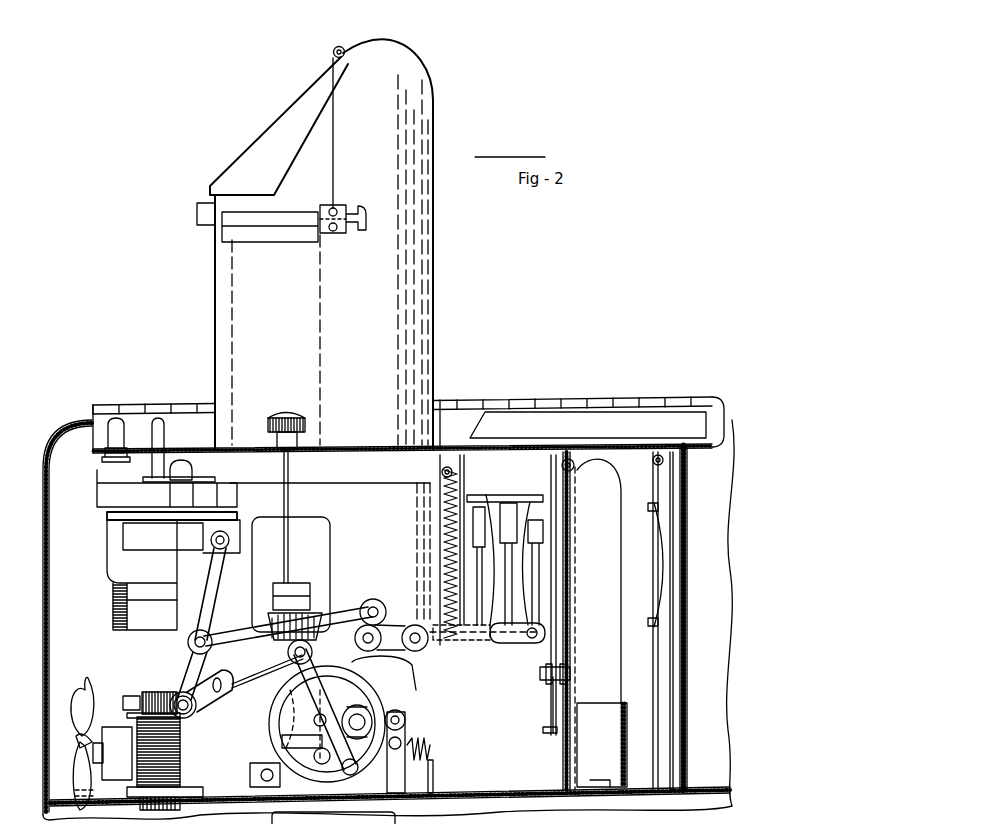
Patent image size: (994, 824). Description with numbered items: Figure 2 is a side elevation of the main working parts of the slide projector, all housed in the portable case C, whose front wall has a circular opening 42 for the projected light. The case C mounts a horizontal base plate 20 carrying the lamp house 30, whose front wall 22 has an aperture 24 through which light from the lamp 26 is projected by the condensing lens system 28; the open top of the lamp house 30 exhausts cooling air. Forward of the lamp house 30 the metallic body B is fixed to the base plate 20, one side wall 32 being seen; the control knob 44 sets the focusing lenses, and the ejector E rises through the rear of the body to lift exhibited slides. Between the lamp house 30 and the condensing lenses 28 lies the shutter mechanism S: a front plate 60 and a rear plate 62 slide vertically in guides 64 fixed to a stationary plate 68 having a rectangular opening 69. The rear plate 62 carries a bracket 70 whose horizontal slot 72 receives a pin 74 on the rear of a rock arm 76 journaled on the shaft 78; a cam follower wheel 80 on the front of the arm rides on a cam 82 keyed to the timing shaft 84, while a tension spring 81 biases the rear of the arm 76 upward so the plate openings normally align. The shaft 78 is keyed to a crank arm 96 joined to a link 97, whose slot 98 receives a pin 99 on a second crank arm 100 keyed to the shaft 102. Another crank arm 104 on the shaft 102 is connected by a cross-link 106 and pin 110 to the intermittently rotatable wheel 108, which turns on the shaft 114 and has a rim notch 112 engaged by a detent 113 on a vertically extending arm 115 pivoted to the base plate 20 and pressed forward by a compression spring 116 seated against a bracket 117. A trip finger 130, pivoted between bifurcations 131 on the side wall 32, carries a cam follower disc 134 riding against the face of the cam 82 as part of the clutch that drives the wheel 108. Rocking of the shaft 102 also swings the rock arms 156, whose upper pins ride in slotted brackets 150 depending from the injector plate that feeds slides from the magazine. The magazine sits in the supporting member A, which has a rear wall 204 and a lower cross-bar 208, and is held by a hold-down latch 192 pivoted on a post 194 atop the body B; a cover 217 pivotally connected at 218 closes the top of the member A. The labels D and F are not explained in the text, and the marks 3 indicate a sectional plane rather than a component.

The switch 3 is at (280, 442).
The base plate 20 is at (535, 790).
The front wall of the lamp house 22 is at (456, 627).
The aperture 24 is at (443, 553).
The lamp 26 is at (622, 702).
The condensing lens system 28 is at (484, 547).
The lamp house 30 is at (650, 782).
The side wall of the body 32 is at (358, 488).
The circular opening 42 is at (43, 546).
The control knob 44 is at (287, 411).
The front shutter plate 60 is at (540, 653).
The rear shutter plate 62 is at (558, 653).
The guides 64 is at (540, 676).
The fixed plate 68 is at (563, 746).
The rectangular opening 69 is at (580, 541).
The bracket 70 is at (545, 622).
The horizontal slot 72 is at (498, 646).
The pin 74 is at (548, 634).
The rock arm 76 is at (471, 641).
The shaft 78 is at (418, 624).
The cam follower wheel 80 is at (357, 648).
The helical tension spring 81 is at (455, 485).
The cam 82 is at (415, 684).
The timing shaft 84 is at (403, 717).
The crank arm 96 is at (394, 614).
The link 97 is at (243, 683).
The slot 98 is at (200, 696).
The pin 99 is at (186, 713).
The second crank arm 100 is at (187, 677).
The shaft 102 is at (187, 643).
The crank arm 104 is at (242, 645).
The cross-link 106 is at (283, 690).
The intermittently rotatable wheel 108 is at (272, 751).
The pin 110 is at (353, 768).
The notch 112 is at (268, 727).
The detent 113 is at (392, 712).
The shaft 114 is at (350, 673).
The vertically extending arm 115 is at (400, 780).
The helical compression spring 116 is at (424, 740).
The bracket 117 is at (428, 757).
The trip finger 130 is at (272, 739).
The bifurcations 131 is at (302, 731).
The cam follower disc 134 is at (372, 702).
The brackets 150 is at (203, 531).
The rock arms 156 is at (205, 572).
The hold-down latch 192 is at (177, 481).
The post 194 is at (173, 498).
The rear wall 204 is at (433, 92).
The lower cross-bar 208 is at (218, 500).
The cover 217 is at (277, 128).
The pivotal connection 218 is at (341, 45).
The magazine supporting member A is at (434, 131).
The metallic body B is at (341, 557).
The case C is at (45, 683).
The post D is at (261, 777).
The ejector E is at (322, 620).
The lever F is at (200, 632).
The shutter mechanism S is at (558, 452).